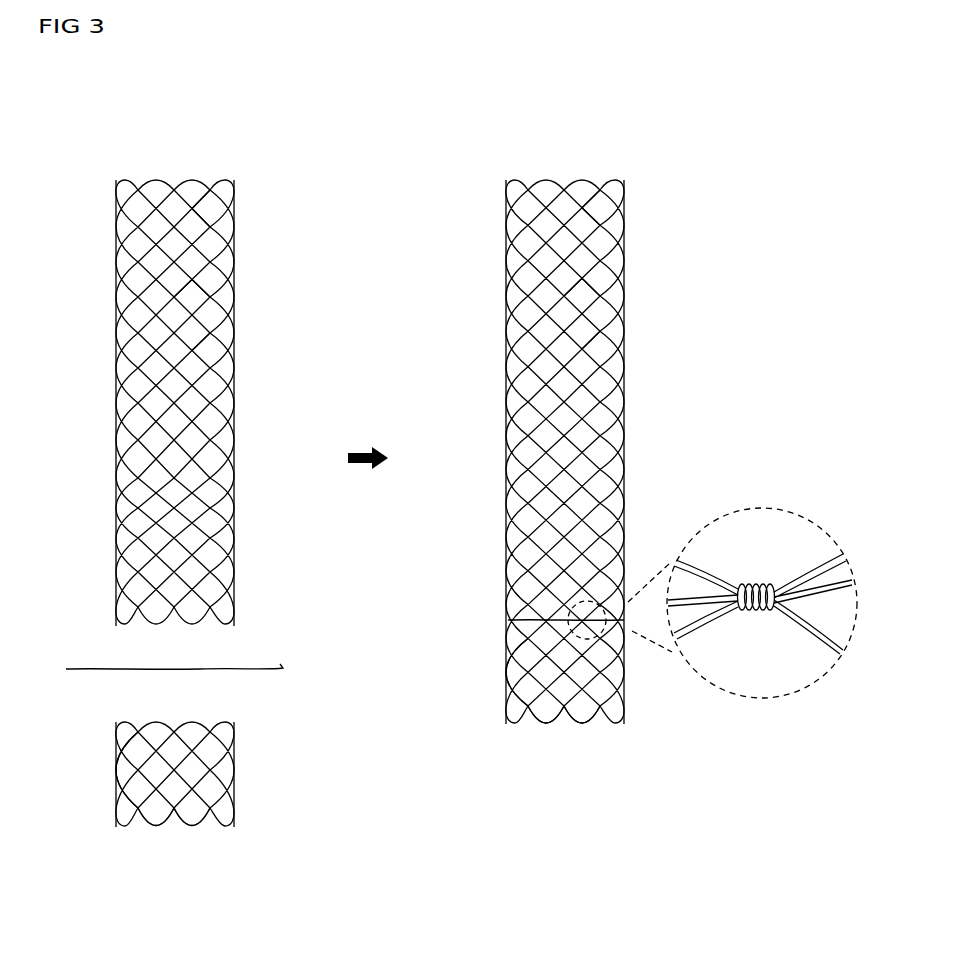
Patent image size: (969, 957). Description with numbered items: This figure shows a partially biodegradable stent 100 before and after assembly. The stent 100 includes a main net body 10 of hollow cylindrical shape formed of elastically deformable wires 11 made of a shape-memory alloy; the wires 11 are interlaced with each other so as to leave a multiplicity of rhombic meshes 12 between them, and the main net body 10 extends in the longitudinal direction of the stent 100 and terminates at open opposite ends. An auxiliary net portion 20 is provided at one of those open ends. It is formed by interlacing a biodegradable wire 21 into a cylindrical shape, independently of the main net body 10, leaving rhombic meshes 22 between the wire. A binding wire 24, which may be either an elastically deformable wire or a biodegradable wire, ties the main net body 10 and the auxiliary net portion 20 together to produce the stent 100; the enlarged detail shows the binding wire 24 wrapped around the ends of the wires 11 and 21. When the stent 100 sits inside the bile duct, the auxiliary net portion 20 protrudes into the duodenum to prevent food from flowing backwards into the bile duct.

The partially biodegradable stent 100 is at (332, 199).
The main net body 10 is at (272, 383).
The elastically deformable wires 11 is at (203, 239).
The rhombic meshes 12 is at (220, 365).
The auxiliary net portion 20 is at (252, 789).
The biodegradable wire 21 is at (118, 781).
The rhombic meshes 22 is at (221, 795).
The binding wire 24 is at (103, 668).